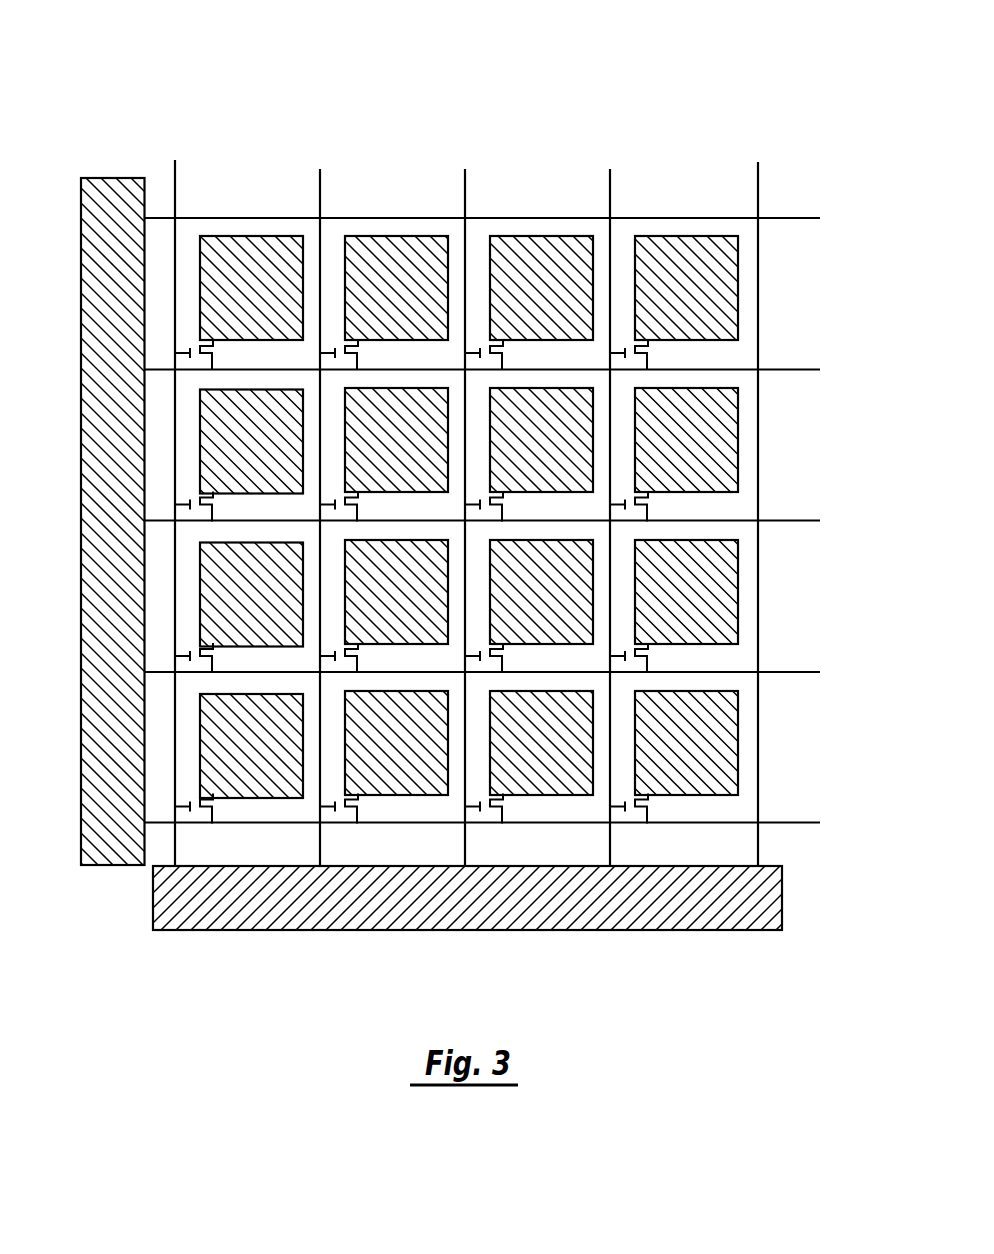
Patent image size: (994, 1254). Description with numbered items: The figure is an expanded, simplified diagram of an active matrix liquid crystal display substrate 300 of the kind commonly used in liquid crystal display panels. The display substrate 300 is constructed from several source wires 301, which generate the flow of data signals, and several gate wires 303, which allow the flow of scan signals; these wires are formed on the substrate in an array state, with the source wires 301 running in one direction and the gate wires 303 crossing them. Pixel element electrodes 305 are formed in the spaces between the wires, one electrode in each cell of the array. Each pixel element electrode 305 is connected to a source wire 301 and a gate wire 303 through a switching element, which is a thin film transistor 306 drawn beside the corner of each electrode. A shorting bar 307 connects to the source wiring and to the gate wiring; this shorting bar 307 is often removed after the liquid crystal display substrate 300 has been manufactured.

The active matrix liquid crystal display substrate 300 is at (680, 155).
The source wires 301 is at (781, 520).
The gate wires 303 is at (319, 197).
The pixel element electrodes 305 is at (697, 262).
The thin film transistor 306 is at (196, 348).
The shorting bar 307 is at (105, 866).